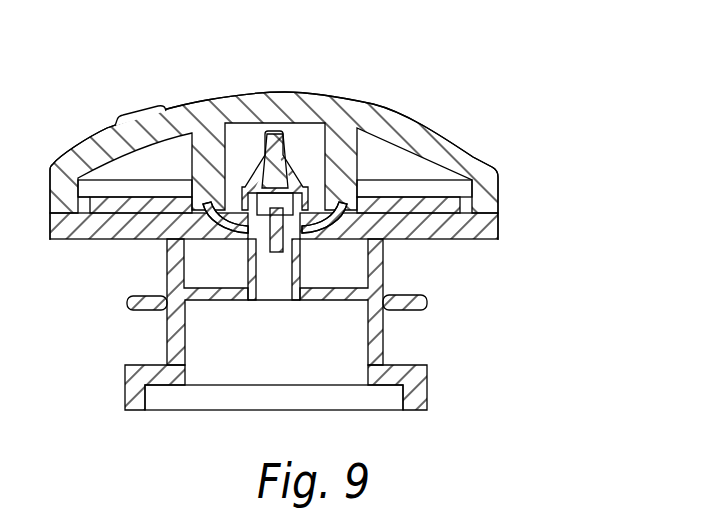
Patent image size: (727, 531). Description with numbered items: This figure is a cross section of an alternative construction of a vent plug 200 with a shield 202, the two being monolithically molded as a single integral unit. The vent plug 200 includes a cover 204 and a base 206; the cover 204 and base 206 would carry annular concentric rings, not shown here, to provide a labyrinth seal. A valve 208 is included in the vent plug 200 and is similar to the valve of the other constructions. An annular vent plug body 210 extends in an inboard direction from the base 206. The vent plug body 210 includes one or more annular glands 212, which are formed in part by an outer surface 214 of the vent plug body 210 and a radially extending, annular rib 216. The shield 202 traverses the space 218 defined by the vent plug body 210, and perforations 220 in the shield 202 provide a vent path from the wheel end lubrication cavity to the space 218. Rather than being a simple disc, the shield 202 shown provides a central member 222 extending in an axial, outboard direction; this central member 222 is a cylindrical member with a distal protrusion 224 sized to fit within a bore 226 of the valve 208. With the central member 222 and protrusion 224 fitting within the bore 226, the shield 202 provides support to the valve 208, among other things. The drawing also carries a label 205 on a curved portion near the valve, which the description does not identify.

The vent plug 200 is at (614, 100).
The shield 202 is at (315, 347).
The cover 204 is at (480, 88).
The curved flaps 205 is at (410, 270).
The base 206 is at (508, 290).
The valve 208 is at (281, 150).
The vent plug body 210 is at (430, 318).
The annular gland 212 is at (527, 338).
The outer surface 214 is at (104, 401).
The annular rib 216 is at (94, 345).
The space 218 is at (192, 228).
The perforations 220 is at (194, 286).
The central member 222 is at (255, 340).
The distal protrusion 224 is at (263, 181).
The bore 226 is at (341, 75).